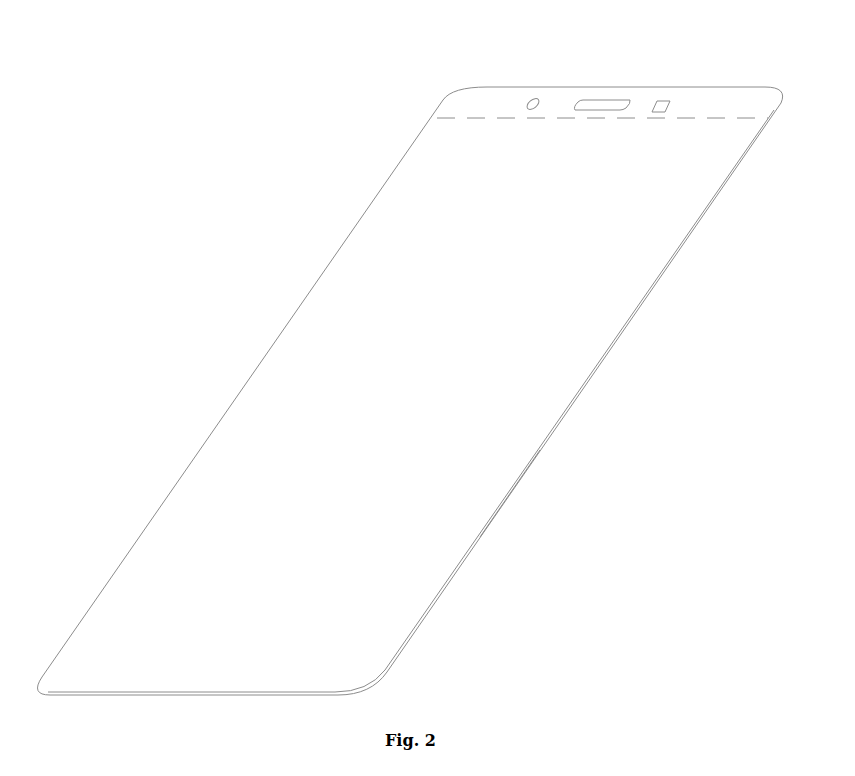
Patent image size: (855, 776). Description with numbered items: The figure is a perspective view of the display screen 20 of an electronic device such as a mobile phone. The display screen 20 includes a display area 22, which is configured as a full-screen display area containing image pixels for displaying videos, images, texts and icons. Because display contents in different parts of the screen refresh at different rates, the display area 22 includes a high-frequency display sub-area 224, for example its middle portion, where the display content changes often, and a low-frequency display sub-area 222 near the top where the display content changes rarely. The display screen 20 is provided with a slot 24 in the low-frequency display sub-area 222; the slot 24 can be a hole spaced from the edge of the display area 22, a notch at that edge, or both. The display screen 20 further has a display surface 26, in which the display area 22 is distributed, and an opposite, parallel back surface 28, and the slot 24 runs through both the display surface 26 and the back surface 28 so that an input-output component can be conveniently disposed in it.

The display screen 20 is at (286, 146).
The display area 22 is at (577, 372).
The low-frequency display sub-area 222 is at (460, 102).
The high-frequency display sub-area 224 is at (269, 359).
The slot 24 is at (656, 103).
The display surface 26 is at (475, 529).
The back surface 28 is at (470, 557).